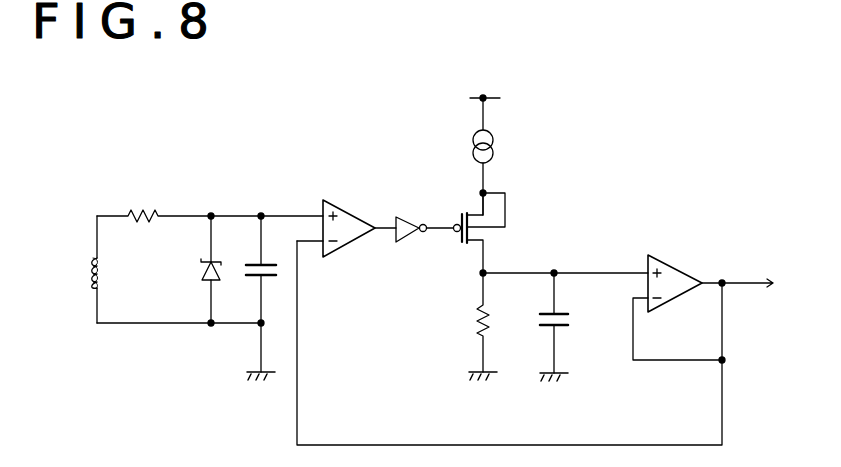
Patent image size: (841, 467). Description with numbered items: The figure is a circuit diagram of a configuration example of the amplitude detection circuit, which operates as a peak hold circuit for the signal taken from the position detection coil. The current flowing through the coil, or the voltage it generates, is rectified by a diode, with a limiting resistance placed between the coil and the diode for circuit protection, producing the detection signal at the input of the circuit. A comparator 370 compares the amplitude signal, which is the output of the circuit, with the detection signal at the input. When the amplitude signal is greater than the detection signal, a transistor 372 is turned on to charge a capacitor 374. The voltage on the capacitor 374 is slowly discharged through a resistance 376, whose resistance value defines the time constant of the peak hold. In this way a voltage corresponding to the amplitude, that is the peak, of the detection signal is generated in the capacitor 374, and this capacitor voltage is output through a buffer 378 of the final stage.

The comparator 370 is at (346, 208).
The transistor 372 is at (457, 242).
The capacitor 374 is at (577, 315).
The resistance 376 is at (476, 318).
The buffer 378 is at (672, 264).